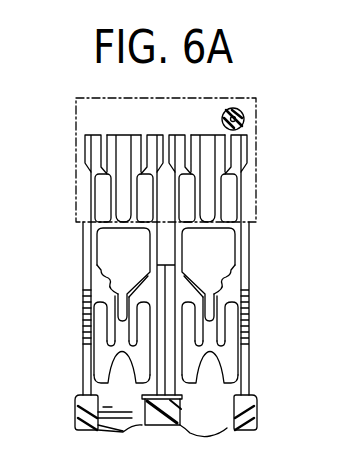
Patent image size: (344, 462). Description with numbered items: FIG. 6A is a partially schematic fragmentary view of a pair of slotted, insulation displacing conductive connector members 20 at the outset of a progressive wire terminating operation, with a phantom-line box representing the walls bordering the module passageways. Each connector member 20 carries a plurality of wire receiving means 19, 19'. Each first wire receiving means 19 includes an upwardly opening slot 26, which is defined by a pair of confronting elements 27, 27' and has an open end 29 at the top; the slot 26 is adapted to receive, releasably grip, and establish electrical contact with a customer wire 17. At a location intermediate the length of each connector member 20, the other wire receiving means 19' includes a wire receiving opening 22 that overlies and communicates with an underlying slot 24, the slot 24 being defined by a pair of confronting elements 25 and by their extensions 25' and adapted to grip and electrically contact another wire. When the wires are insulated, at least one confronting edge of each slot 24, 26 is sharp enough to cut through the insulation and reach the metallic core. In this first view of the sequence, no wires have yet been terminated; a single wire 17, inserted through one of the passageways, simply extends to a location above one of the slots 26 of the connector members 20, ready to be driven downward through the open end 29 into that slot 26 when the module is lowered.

The wire 17 is at (240, 106).
The wire receiving means 19 is at (271, 304).
The wire receiving means 19' is at (274, 283).
The connector member 20 is at (98, 386).
The wire receiving opening 22 is at (175, 265).
The slot 24 is at (119, 298).
The confronting elements 25 is at (160, 277).
The slot 25' is at (126, 344).
The upwardly opening slot 26 is at (93, 150).
The confronting element 27 is at (146, 144).
The confronting element 27' is at (199, 144).
The open end 29 is at (147, 134).